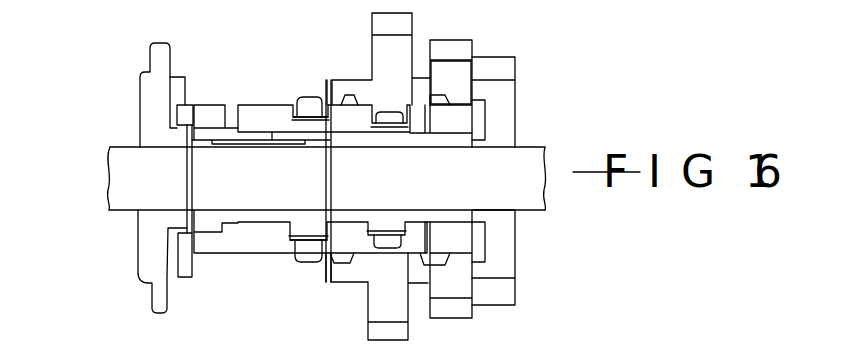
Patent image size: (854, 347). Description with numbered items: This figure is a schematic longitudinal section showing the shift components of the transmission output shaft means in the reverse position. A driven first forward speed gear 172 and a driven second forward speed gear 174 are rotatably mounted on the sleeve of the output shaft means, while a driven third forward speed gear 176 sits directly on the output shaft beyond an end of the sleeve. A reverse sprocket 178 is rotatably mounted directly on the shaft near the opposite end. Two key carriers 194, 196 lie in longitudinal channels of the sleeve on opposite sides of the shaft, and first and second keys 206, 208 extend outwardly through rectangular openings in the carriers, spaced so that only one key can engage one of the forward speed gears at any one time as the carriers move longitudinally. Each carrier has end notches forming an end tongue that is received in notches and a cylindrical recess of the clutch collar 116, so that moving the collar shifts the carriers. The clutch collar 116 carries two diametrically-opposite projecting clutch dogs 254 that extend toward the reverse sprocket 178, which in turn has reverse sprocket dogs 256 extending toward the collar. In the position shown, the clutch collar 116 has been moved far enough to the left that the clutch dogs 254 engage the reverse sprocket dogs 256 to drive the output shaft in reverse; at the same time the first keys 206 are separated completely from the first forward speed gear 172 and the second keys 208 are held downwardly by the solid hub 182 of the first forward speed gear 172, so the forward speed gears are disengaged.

The clutch collar 116 is at (204, 96).
The first forward speed gear 172 is at (397, 55).
The second forward speed gear 174 is at (453, 72).
The third forward speed gear 176 is at (505, 92).
The reverse sprocket 178 is at (142, 102).
The solid hub 182 is at (407, 107).
The key carrier 194 is at (428, 122).
The key carrier 196 is at (428, 240).
The first key 206 is at (308, 100).
The second key 208 is at (388, 110).
The clutch collar dog 254 is at (183, 240).
The reverse sprocket dog 256 is at (182, 90).